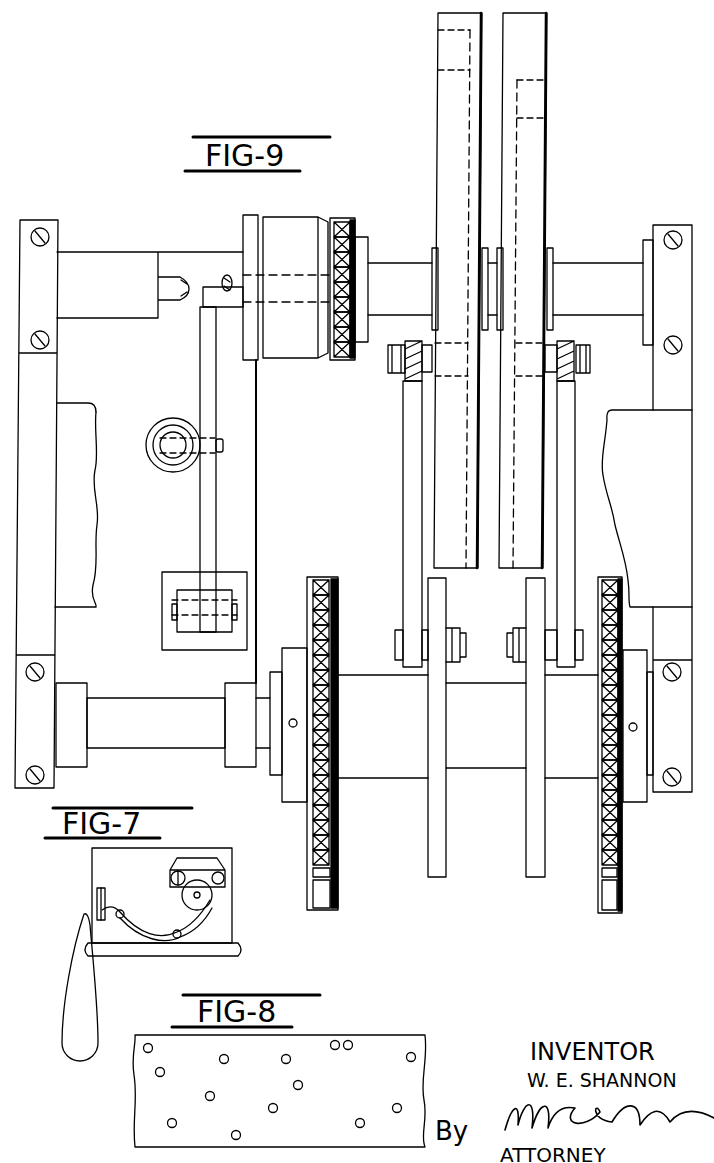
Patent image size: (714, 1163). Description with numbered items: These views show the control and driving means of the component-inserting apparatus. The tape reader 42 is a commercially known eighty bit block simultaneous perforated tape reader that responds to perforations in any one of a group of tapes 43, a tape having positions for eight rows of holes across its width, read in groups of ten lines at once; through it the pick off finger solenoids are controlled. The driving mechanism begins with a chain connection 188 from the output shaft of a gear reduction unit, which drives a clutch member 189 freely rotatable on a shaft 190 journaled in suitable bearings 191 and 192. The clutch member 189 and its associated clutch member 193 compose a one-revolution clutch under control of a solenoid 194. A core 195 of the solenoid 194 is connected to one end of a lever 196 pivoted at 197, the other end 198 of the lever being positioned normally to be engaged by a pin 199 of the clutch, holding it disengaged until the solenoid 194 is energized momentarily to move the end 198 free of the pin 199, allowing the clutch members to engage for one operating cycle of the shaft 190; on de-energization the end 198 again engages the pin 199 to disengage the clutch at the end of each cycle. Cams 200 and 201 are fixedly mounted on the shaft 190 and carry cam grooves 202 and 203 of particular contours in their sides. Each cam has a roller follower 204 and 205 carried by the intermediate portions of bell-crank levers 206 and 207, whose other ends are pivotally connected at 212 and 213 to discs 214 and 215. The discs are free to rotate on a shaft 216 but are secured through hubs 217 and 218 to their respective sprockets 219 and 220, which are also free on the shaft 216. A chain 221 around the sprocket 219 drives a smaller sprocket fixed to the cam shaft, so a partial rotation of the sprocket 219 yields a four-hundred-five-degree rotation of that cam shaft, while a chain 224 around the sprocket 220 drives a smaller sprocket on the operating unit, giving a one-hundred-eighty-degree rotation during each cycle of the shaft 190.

In FIG. 7, the tape reader 42 is at (225, 863).
In FIG. 7, the perforated tape 43 is at (95, 1012).
In FIG. 8, the perforated tape 43 is at (395, 1042).
In FIG. 9, the chain connection 188 is at (350, 226).
In FIG. 9, the clutch member 189 is at (283, 224).
In FIG. 9, the shaft 190 is at (402, 275).
In FIG. 9, the bearing 191 is at (80, 262).
In FIG. 9, the bearing 192 is at (645, 241).
In FIG. 9, the clutch member 193 is at (248, 220).
In FIG. 9, the solenoid 194 is at (165, 583).
In FIG. 9, the core 195 is at (182, 633).
In FIG. 9, the lever 196 is at (202, 488).
In FIG. 9, the pivot 197 is at (222, 438).
In FIG. 9, the lever end 198 is at (205, 320).
In FIG. 9, the pin 199 is at (203, 287).
In FIG. 9, the cam 200 is at (540, 33).
In FIG. 9, the cam 201 is at (443, 20).
In FIG. 9, the cam groove 202 is at (531, 81).
In FIG. 9, the cam groove 203 is at (457, 33).
In FIG. 9, the cam follower roller 204 is at (556, 342).
In FIG. 9, the cam follower roller 205 is at (433, 340).
In FIG. 9, the lever 206 is at (572, 396).
In FIG. 9, the lever 207 is at (413, 468).
In FIG. 9, the pivotal connection 212 is at (520, 648).
In FIG. 9, the pivotal connection 213 is at (396, 646).
In FIG. 9, the disc 214 is at (534, 874).
In FIG. 9, the disc 215 is at (437, 874).
In FIG. 9, the shaft 216 is at (148, 745).
In FIG. 9, the hub 217 is at (573, 770).
In FIG. 9, the hub 218 is at (396, 775).
In FIG. 9, the sprocket 219 is at (622, 840).
In FIG. 9, the sprocket 220 is at (338, 845).
In FIG. 9, the chain 221 is at (622, 893).
In FIG. 9, the chain 224 is at (340, 893).